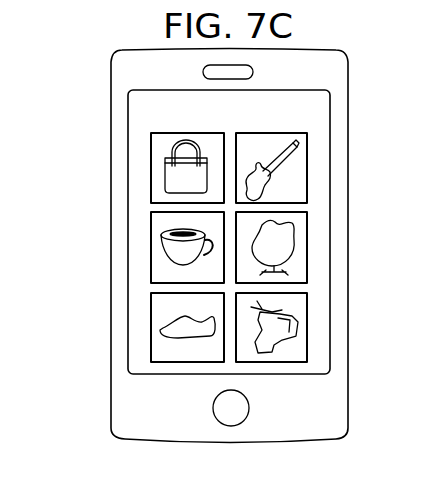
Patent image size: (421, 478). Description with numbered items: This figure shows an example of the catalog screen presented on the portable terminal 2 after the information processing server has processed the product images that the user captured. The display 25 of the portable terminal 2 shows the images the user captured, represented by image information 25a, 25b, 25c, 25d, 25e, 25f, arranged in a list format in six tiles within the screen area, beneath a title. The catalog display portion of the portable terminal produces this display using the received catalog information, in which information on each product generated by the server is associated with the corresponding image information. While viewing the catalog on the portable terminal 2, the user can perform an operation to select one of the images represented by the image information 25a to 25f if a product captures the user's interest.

The portable terminal 2 is at (348, 97).
The display 25 is at (330, 339).
The image information 25a is at (150, 170).
The image information 25b is at (307, 170).
The image information 25c is at (152, 248).
The image information 25d is at (307, 247).
The image information 25e is at (153, 332).
The image information 25f is at (307, 327).